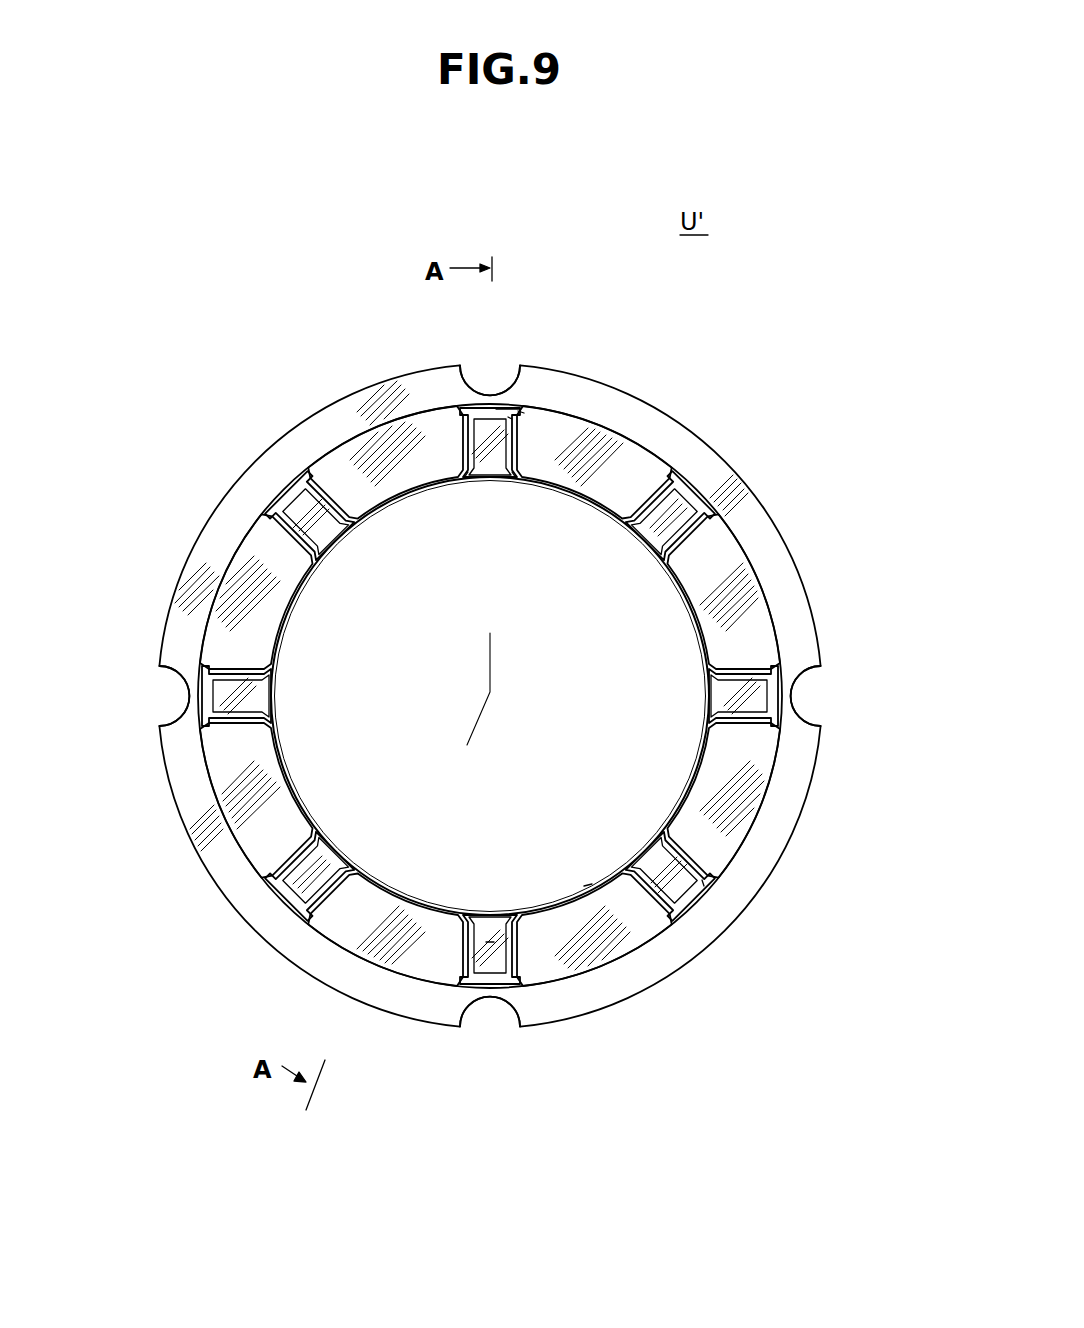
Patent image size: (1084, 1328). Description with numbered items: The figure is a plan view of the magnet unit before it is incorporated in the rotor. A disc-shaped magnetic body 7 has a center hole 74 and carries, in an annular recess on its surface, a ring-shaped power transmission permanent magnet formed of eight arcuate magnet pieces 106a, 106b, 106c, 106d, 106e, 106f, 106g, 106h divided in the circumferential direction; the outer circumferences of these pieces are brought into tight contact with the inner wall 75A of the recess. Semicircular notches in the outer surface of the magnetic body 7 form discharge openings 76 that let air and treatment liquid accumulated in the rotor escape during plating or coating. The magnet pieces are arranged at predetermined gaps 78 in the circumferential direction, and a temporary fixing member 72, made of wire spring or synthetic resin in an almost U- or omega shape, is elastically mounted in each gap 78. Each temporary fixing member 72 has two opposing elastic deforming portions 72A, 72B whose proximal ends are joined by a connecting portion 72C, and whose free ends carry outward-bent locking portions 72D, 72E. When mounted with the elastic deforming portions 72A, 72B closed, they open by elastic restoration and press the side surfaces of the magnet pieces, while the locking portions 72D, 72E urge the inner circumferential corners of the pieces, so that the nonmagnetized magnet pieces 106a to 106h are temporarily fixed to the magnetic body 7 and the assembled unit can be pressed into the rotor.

The magnetic body 7 is at (738, 460).
The temporary fixing member 72 is at (715, 292).
The elastic deforming portion 72A is at (528, 420).
The elastic deforming portion 72B is at (496, 408).
The connecting portion 72C is at (512, 418).
The locking portion 72D is at (519, 480).
The locking portion 72E is at (464, 480).
The center hole 74 is at (588, 884).
The inner wall 75A is at (708, 884).
The discharge opening 76 is at (478, 393).
The gap 78 is at (490, 940).
The magnet piece 106a is at (625, 465).
The magnet piece 106b is at (756, 625).
The magnet piece 106c is at (746, 800).
The magnet piece 106d is at (595, 950).
The magnet piece 106e is at (428, 965).
The magnet piece 106f is at (255, 842).
The magnet piece 106g is at (237, 600).
The magnet piece 106h is at (387, 440).